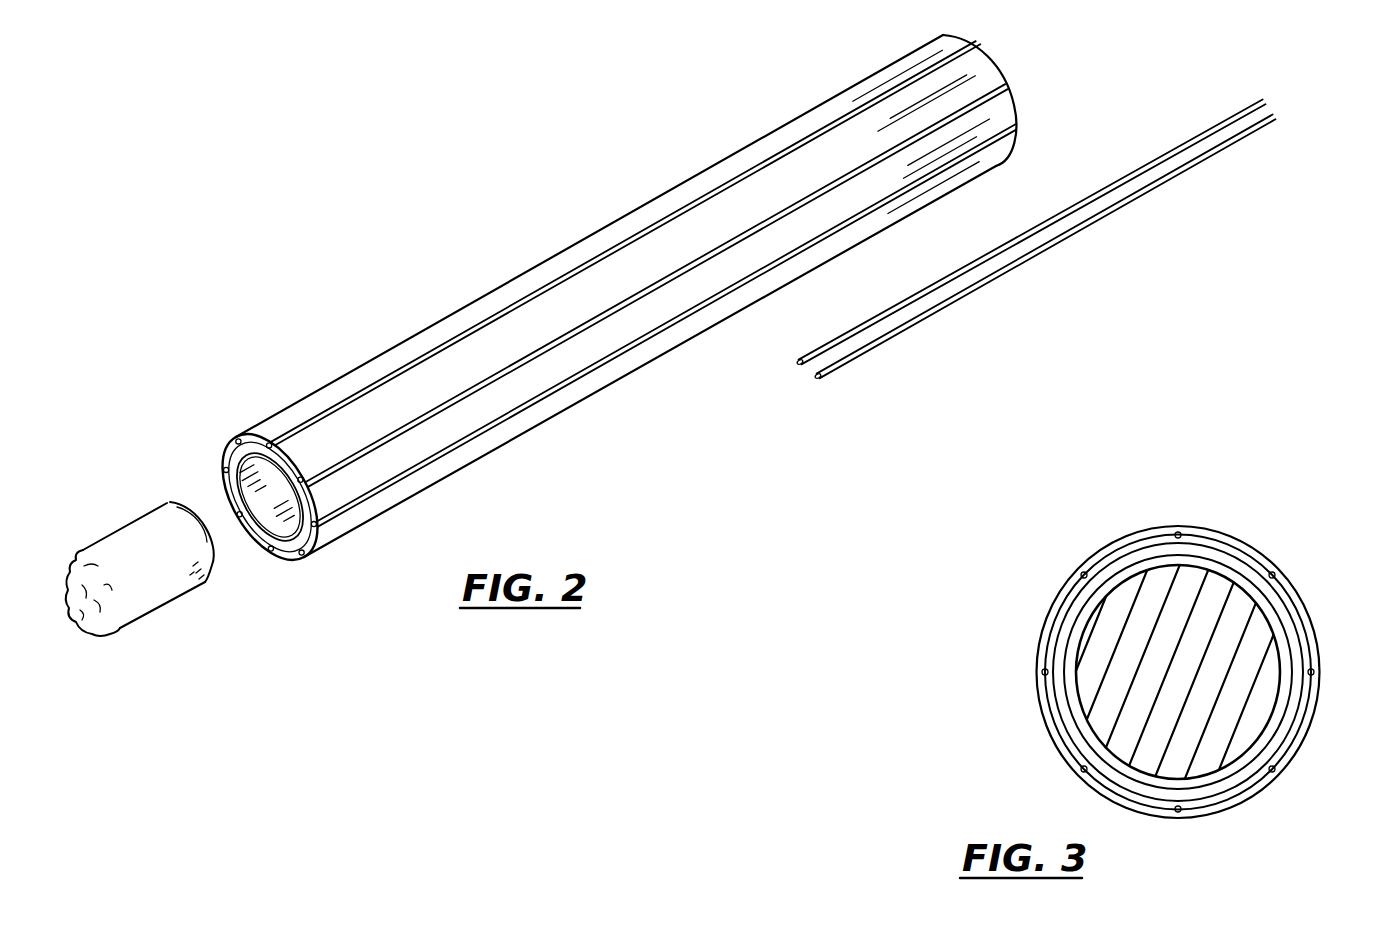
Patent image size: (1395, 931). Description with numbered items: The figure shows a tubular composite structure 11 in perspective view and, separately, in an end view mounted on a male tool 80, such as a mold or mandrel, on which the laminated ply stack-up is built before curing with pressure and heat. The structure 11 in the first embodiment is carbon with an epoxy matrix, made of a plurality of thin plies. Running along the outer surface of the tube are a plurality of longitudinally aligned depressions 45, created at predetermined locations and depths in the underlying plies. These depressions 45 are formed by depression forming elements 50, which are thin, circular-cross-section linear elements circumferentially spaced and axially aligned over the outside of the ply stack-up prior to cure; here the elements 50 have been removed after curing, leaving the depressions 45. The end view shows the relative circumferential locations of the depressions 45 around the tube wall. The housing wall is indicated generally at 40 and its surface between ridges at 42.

In FIG. 2, the composite structure 11 is at (692, 138).
In FIG. 3, the composite structure 11 is at (1255, 500).
In FIG. 2, the tubular housing 40 is at (426, 328).
In FIG. 2, the housing outer surface 42 is at (592, 352).
In FIG. 2, the depressions 45 is at (613, 358).
In FIG. 3, the depressions 45 is at (1181, 532).
In FIG. 2, the depression forming elements 50 is at (924, 314).
In FIG. 2, the male tool 80 is at (173, 597).
In FIG. 3, the male tool 80 is at (1090, 637).